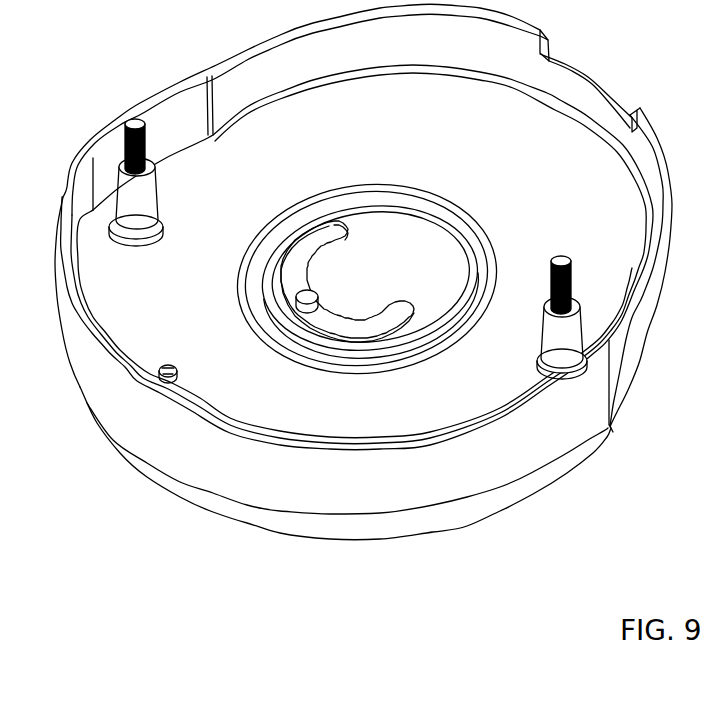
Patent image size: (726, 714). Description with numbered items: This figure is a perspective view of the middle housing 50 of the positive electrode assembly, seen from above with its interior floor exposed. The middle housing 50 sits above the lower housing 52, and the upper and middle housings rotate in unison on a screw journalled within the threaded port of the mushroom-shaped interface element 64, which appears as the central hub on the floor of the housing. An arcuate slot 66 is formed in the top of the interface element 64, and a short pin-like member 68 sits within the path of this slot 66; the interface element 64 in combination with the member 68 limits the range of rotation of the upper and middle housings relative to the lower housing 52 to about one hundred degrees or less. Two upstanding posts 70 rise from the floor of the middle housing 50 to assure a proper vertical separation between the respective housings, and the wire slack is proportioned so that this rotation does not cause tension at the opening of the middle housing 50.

The middle housing 50 is at (140, 420).
The lower housing 52 is at (308, 525).
The interface element 64 is at (441, 253).
The arcuate slot 66 is at (307, 253).
The member 68 is at (302, 303).
The posts 70 is at (128, 140).